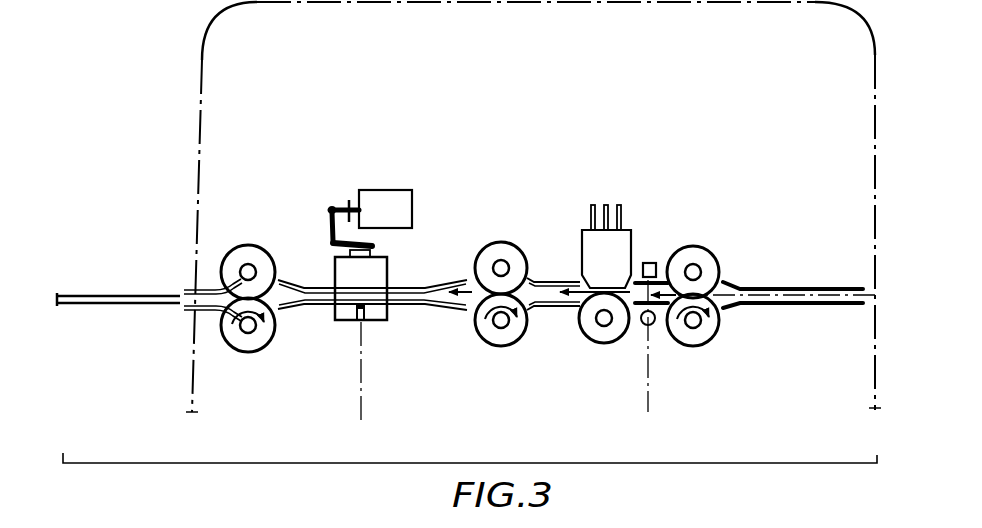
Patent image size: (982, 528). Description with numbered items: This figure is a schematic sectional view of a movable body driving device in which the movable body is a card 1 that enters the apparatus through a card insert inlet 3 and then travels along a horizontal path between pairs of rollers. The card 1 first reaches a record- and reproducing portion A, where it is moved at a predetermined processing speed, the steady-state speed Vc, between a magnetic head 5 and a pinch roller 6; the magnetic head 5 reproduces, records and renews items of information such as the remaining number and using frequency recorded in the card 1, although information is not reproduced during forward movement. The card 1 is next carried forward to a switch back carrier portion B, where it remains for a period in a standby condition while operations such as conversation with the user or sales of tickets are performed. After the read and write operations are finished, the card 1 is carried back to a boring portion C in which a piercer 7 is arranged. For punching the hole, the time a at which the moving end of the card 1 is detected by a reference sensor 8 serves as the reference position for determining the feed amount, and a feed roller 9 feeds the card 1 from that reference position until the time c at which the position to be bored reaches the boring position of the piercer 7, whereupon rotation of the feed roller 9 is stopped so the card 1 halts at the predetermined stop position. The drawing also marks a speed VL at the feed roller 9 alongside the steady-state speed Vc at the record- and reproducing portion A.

The card 1 is at (130, 296).
The card insert inlet 3 is at (179, 309).
The magnetic head 5 is at (585, 250).
The pinch roller 6 is at (620, 341).
The piercer 7 is at (377, 275).
The reference sensor 8 is at (650, 263).
The feed roller 9 is at (510, 347).
The record- and reproducing portion A is at (634, 224).
The switch back carrier portion B is at (738, 277).
The boring portion C is at (328, 258).
The time of detection of card moving end a is at (648, 366).
The time of reaching boring position c is at (360, 387).
The web feed velocity VL is at (470, 345).
The steady-state speed Vc is at (562, 345).